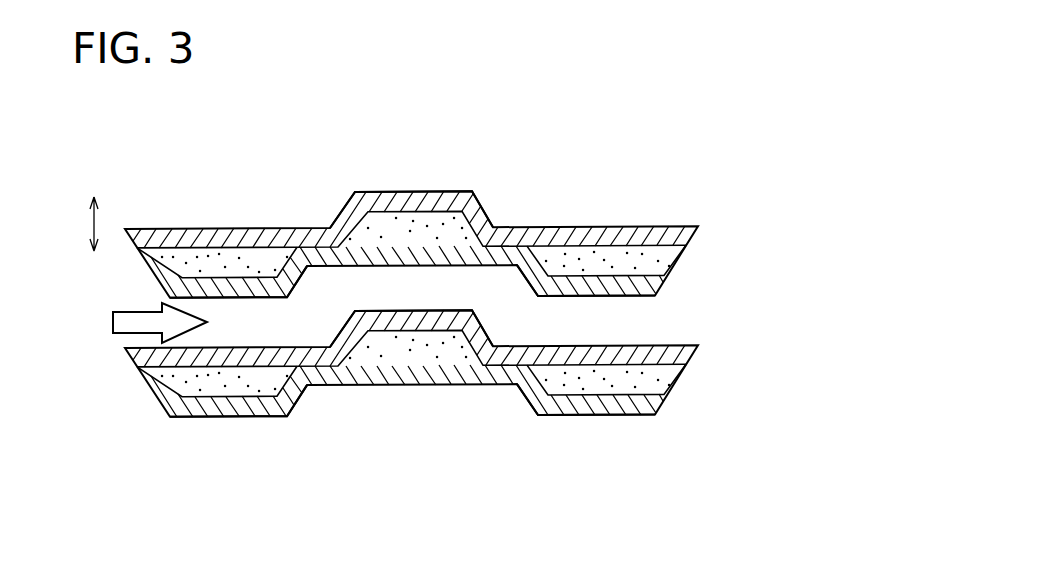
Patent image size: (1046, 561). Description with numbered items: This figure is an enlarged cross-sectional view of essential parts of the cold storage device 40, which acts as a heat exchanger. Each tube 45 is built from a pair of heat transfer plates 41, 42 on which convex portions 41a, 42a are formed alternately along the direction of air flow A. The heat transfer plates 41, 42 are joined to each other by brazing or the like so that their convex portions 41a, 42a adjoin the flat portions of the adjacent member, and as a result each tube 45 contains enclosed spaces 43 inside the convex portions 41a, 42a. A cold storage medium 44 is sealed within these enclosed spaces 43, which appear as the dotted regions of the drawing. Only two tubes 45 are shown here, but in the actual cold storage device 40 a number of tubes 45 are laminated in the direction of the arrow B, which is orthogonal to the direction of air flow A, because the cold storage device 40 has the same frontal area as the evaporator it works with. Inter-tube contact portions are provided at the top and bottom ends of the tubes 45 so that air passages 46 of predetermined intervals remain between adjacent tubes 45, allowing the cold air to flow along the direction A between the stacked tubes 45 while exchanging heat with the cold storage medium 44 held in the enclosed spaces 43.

The cold storage device 40 is at (820, 207).
The heat transfer plate 41 is at (550, 228).
The convex portion 41a is at (452, 193).
The heat transfer plate 42 is at (490, 266).
The convex portion 42a is at (240, 298).
The enclosed space 43 is at (435, 304).
The cold storage medium 44 is at (391, 230).
The tube 45 is at (716, 237).
The air passage 46 is at (320, 322).
The direction of air flow A is at (112, 323).
The lamination direction B is at (90, 222).